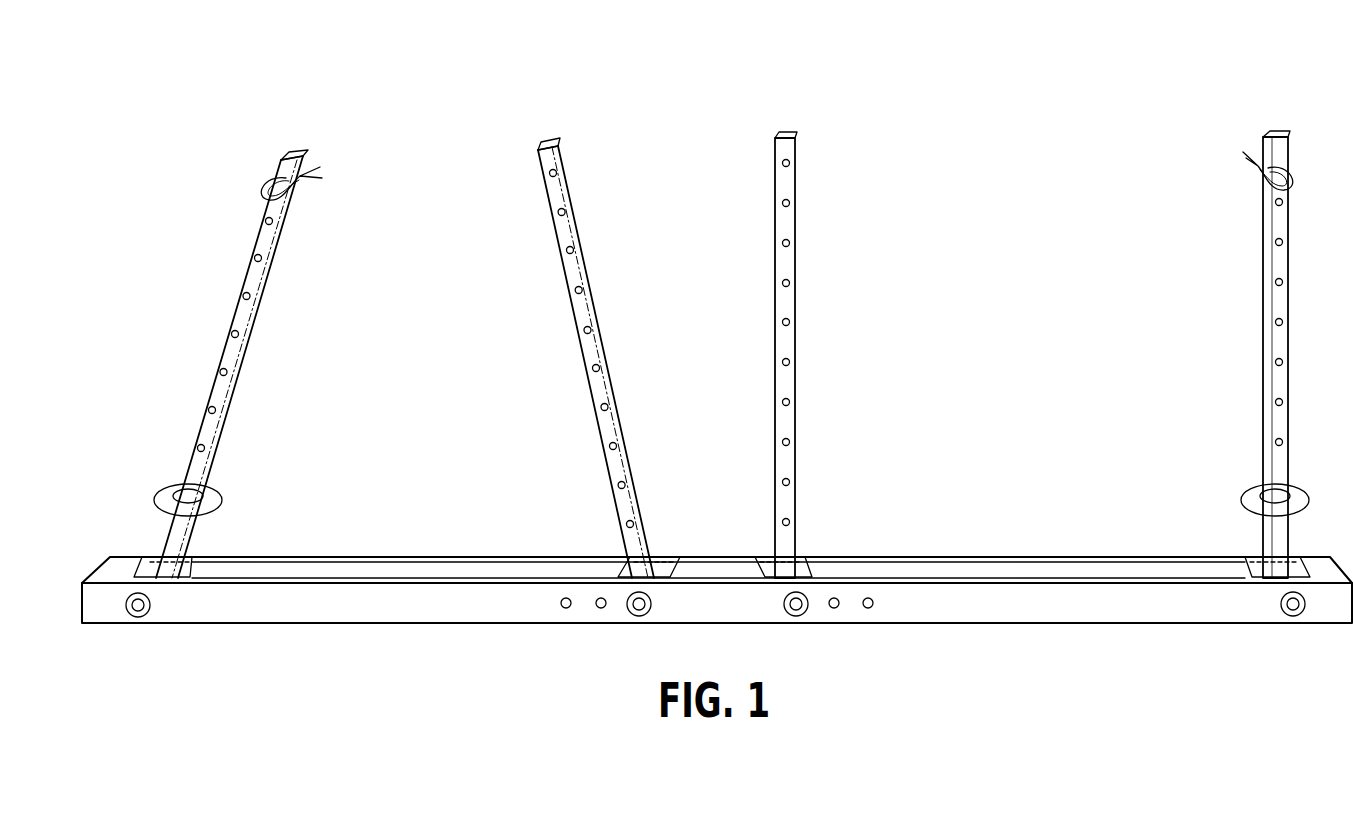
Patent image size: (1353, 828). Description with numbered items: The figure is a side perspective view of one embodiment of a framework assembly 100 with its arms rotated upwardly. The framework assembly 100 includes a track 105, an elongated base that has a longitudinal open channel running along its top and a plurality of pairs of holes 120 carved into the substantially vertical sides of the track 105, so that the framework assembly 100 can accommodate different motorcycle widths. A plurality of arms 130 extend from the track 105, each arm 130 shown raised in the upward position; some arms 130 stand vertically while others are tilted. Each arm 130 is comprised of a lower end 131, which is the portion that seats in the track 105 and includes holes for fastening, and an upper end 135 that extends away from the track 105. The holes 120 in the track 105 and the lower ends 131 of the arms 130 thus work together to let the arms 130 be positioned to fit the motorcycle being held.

The framework assembly 100 is at (717, 372).
The track 105 is at (353, 612).
The pairs of holes 120 is at (563, 612).
The arm 130 is at (834, 355).
The lower end 131 is at (802, 503).
The upper end 135 is at (810, 218).